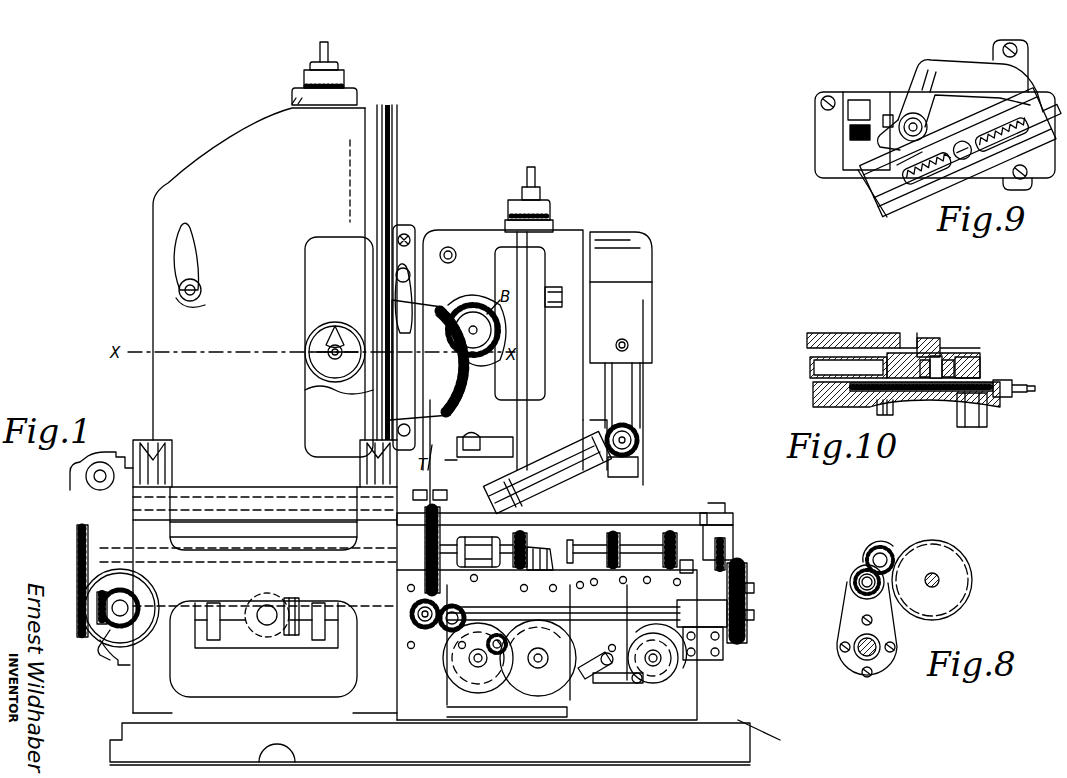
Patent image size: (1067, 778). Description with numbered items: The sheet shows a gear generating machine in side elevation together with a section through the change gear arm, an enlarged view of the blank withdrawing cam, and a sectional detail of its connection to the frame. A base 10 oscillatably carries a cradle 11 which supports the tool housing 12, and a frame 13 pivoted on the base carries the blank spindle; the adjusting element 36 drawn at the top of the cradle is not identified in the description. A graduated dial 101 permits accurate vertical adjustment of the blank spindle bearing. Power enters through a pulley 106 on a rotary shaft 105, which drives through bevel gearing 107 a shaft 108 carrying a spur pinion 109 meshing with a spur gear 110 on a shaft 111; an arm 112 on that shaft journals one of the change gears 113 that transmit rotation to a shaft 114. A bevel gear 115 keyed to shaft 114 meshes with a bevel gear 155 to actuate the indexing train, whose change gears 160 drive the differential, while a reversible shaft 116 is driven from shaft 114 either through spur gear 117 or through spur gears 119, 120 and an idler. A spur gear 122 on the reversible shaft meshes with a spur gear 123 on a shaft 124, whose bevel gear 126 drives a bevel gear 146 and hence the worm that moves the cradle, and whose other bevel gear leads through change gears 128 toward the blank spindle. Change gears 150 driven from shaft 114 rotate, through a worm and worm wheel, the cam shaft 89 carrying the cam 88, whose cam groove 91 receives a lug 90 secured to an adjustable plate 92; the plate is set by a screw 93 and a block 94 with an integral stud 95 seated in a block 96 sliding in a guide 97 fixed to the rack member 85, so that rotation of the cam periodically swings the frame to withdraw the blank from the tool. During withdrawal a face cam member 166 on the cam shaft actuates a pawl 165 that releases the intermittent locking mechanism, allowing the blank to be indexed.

In FIG. 1, the base 10 is at (700, 710).
In FIG. 9, the base 10 is at (870, 182).
In FIG. 1, the cradle 11 is at (135, 458).
In FIG. 1, the tool support or housing 12 is at (427, 435).
In FIG. 1, the frame 13 is at (600, 513).
In FIG. 1, the adjusting knob 36 is at (331, 63).
In FIG. 1, the rack member 85 is at (725, 512).
In FIG. 10, the rack member 85 is at (925, 340).
In FIG. 9, the cam 88 is at (857, 92).
In FIG. 1, the shaft 89 is at (657, 668).
In FIG. 10, the lug or projection 90 is at (892, 411).
In FIG. 9, the cam groove 91 is at (842, 103).
In FIG. 10, the adjustable plate 92 is at (822, 394).
In FIG. 9, the screw 93 is at (907, 183).
In FIG. 10, the screw 93 is at (992, 383).
In FIG. 10, the block 94 is at (965, 374).
In FIG. 10, the stud 95 is at (928, 364).
In FIG. 10, the block 96 is at (948, 368).
In FIG. 10, the guide 97 is at (810, 366).
In FIG. 1, the graduated dial 101 is at (548, 200).
In FIG. 1, the rotary shaft 105 is at (130, 606).
In FIG. 1, the pulley 106 is at (118, 648).
In FIG. 1, the bevel gearing 107 is at (132, 600).
In FIG. 1, the shaft 108 is at (108, 634).
In FIG. 1, the spur pinion 109 is at (97, 608).
In FIG. 1, the spur gear 110 is at (77, 535).
In FIG. 1, the shaft 111 is at (240, 562).
In FIG. 8, the shaft 111 is at (872, 656).
In FIG. 1, the arm 112 is at (425, 540).
In FIG. 8, the arm 112 is at (890, 628).
In FIG. 8, the change gears 113 is at (886, 551).
In FIG. 1, the shaft 114 is at (570, 546).
In FIG. 1, the bevel gear 115 is at (521, 548).
In FIG. 1, the reversible shaft 116 is at (738, 568).
In FIG. 1, the spur gear 117 is at (612, 534).
In FIG. 1, the spur gear 119 is at (675, 539).
In FIG. 1, the spur gear 120 is at (430, 602).
In FIG. 1, the spur gear 122 is at (745, 578).
In FIG. 1, the spur gear 123 is at (747, 635).
In FIG. 1, the shaft 124 is at (620, 615).
In FIG. 1, the bevel gear 126 is at (291, 602).
In FIG. 1, the change gears 128 is at (448, 630).
In FIG. 1, the bevel gear 146 is at (268, 603).
In FIG. 1, the change gears 150 is at (733, 536).
In FIG. 1, the bevel gear 155 is at (548, 569).
In FIG. 1, the change gears 160 is at (560, 686).
In FIG. 1, the pawl 165 is at (596, 677).
In FIG. 1, the face cam member 166 is at (684, 670).